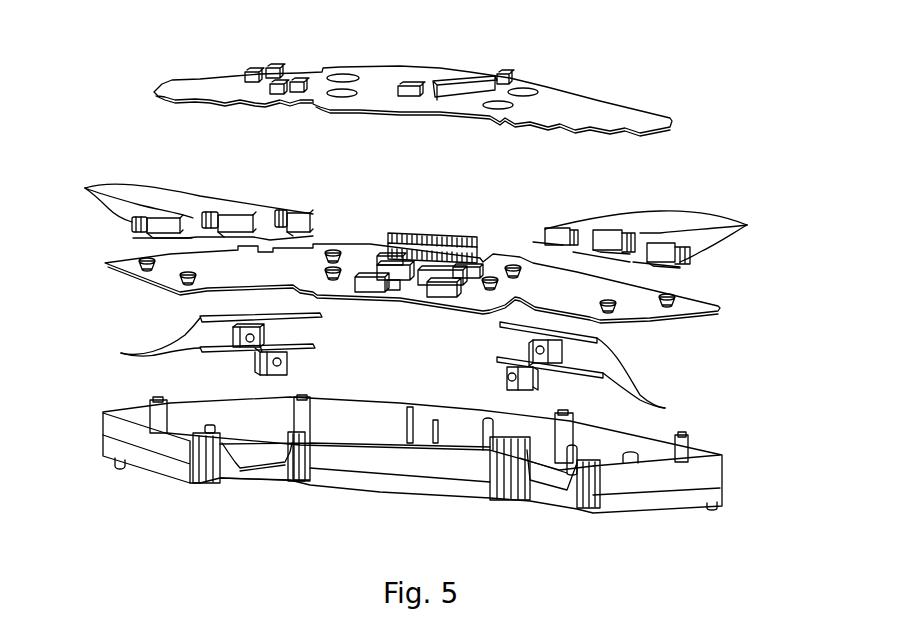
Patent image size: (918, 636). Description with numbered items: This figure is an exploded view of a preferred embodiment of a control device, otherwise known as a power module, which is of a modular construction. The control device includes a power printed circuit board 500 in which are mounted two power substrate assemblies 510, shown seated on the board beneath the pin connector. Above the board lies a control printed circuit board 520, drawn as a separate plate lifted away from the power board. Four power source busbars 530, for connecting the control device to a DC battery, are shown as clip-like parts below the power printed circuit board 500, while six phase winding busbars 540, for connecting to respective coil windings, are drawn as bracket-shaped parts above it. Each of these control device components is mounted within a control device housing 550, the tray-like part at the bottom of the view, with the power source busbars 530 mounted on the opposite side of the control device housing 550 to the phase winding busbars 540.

The power printed circuit board 500 is at (712, 313).
The power substrate assembly 510 is at (172, 268).
The control printed circuit board 520 is at (549, 100).
The power source busbar 530 is at (121, 353).
The phase winding busbar 540 is at (84, 188).
The control device housing 550 is at (630, 503).